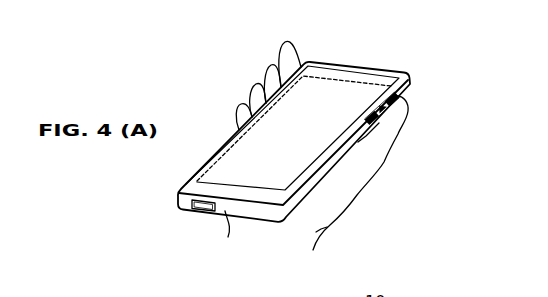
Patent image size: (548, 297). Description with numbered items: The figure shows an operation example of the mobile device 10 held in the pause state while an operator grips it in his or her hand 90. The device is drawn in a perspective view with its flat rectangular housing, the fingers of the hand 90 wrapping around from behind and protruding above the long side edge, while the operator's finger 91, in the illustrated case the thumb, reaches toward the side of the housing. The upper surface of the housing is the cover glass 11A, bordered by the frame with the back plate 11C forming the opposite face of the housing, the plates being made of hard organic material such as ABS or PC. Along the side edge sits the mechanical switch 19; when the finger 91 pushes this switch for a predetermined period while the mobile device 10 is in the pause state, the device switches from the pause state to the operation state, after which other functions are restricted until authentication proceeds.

The mobile device 10 is at (393, 40).
The cover glass 11A is at (216, 150).
The back plate 11C is at (234, 131).
The mechanical switch 19 is at (400, 98).
The hand 90 is at (268, 257).
The finger 91 is at (408, 140).